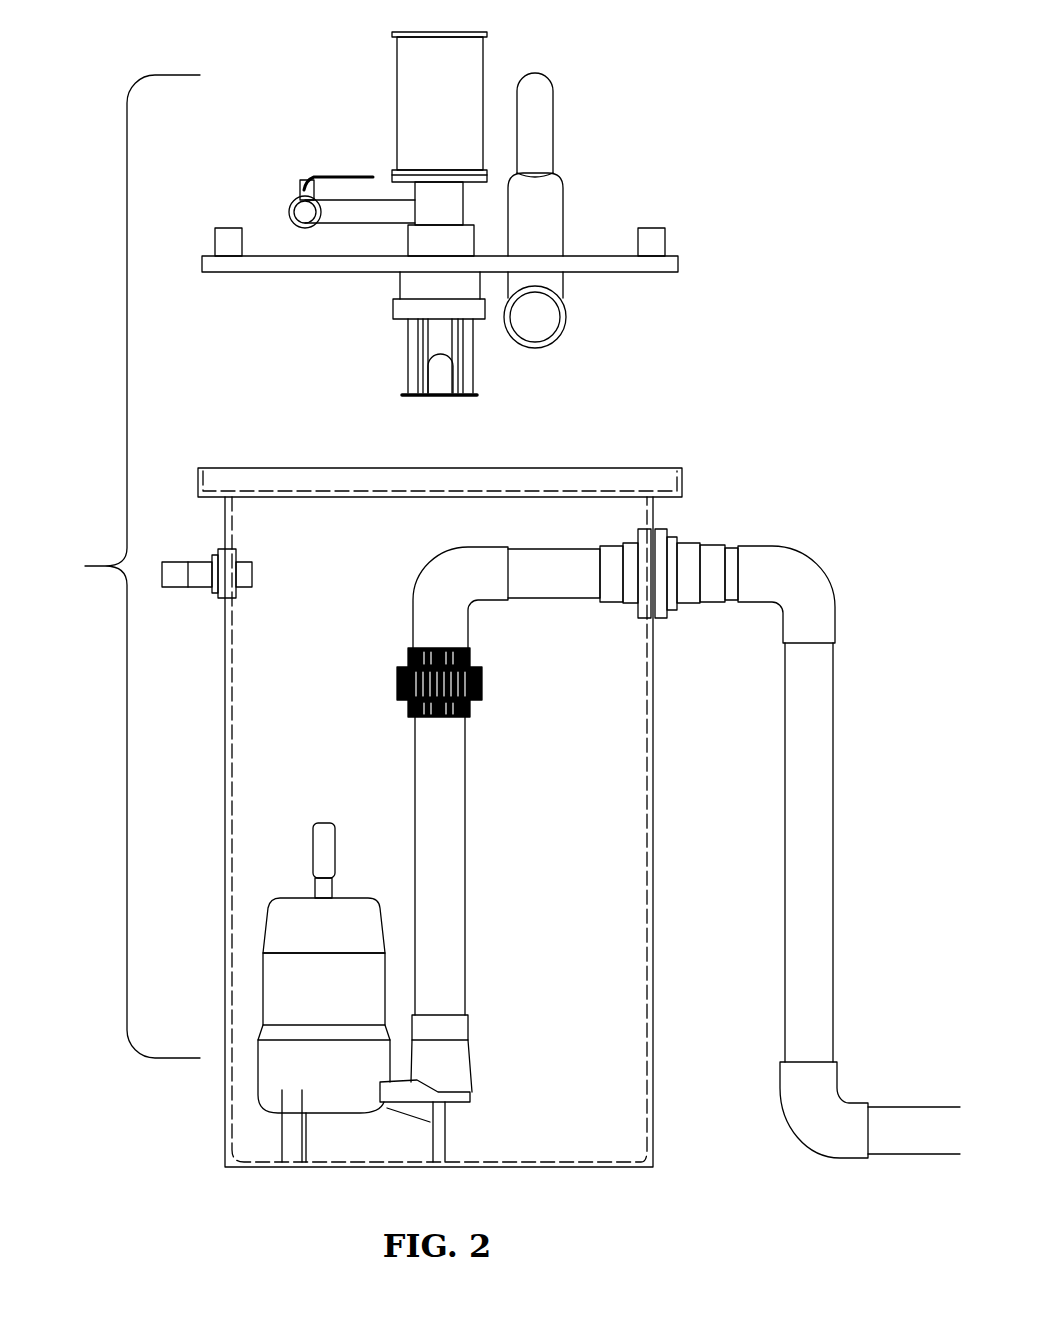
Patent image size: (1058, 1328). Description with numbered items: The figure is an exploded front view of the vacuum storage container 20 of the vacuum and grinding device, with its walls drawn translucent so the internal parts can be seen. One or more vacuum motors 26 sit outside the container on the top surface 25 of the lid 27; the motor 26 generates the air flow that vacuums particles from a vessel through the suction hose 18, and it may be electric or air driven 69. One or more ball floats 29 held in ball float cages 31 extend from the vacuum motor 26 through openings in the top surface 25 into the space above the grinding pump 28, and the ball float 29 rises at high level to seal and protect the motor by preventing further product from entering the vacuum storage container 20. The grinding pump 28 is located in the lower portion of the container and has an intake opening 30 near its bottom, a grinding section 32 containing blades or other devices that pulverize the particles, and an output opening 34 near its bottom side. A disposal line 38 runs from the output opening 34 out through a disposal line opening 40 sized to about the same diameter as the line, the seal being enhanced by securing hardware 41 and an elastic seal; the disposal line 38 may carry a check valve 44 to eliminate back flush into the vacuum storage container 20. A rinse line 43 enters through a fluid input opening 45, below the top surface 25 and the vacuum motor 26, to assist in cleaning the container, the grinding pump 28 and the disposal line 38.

The vacuum storage container 20 is at (85, 566).
The vacuum motor 26 is at (350, 64).
The air driven 69 is at (298, 201).
The suction hose 18 is at (598, 176).
The top surface 25 is at (605, 250).
The lid 27 is at (680, 258).
The ball float cage 31 is at (405, 361).
The ball float 29 is at (437, 385).
The securing hardware 41 is at (655, 620).
The rinse line 43 is at (172, 562).
The fluid input opening 45 is at (232, 595).
The disposal line 38 is at (452, 930).
The disposal line opening 40 is at (660, 530).
The check valve 44 is at (700, 546).
The grinding pump 28 is at (273, 995).
The grinding section 32 is at (303, 1005).
The intake opening 30 is at (338, 1110).
The output opening 34 is at (383, 1107).